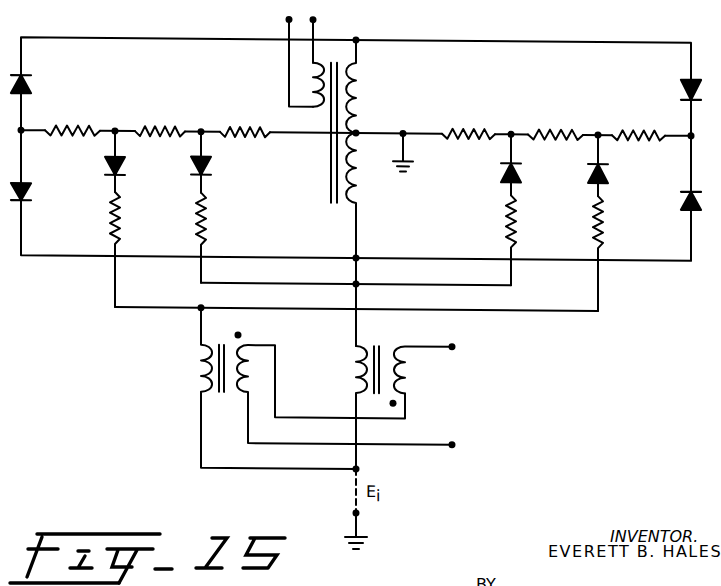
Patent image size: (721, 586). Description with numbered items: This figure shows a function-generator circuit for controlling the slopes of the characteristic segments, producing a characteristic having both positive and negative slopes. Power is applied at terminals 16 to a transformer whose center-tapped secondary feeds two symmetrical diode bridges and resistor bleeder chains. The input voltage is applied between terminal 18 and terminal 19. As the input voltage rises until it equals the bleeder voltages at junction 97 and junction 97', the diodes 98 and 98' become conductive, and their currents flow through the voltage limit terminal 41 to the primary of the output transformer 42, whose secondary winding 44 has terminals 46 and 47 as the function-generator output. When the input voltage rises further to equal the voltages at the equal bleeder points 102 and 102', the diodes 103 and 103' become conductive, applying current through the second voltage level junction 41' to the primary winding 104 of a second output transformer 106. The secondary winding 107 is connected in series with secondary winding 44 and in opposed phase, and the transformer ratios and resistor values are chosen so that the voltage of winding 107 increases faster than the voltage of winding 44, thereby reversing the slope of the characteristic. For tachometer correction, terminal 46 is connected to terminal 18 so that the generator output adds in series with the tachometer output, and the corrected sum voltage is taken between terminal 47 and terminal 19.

The terminals 16 is at (289, 19).
The junction 97 is at (236, 118).
The junction 97' is at (476, 120).
The diode 98 is at (221, 163).
The diode 98' is at (488, 165).
The bleeder point 102 is at (150, 117).
The bleeder point 102' is at (562, 120).
The diode 103 is at (91, 161).
The diode 103' is at (620, 166).
The voltage limit terminal 41 is at (356, 276).
The second voltage level junction 41' is at (356, 321).
The primary winding 104 is at (200, 375).
The second output transformer 106 is at (222, 348).
The secondary winding 107 is at (246, 372).
The output transformer 42 is at (367, 349).
The secondary winding 44 is at (397, 375).
The terminal 46 is at (455, 445).
The terminal 47 is at (455, 346).
The tachometer output terminal 18 is at (359, 469).
The terminal 19 is at (359, 514).